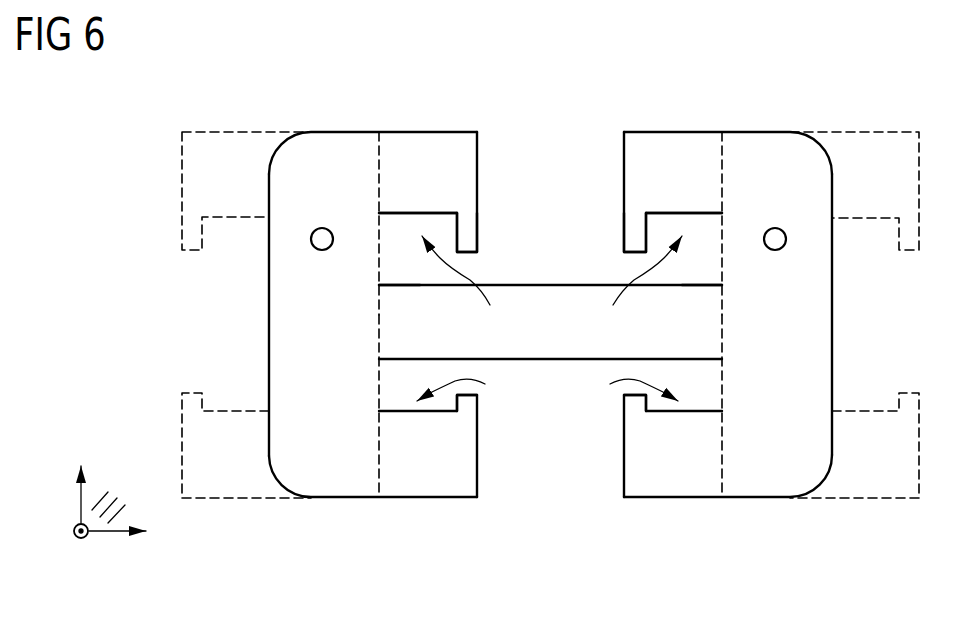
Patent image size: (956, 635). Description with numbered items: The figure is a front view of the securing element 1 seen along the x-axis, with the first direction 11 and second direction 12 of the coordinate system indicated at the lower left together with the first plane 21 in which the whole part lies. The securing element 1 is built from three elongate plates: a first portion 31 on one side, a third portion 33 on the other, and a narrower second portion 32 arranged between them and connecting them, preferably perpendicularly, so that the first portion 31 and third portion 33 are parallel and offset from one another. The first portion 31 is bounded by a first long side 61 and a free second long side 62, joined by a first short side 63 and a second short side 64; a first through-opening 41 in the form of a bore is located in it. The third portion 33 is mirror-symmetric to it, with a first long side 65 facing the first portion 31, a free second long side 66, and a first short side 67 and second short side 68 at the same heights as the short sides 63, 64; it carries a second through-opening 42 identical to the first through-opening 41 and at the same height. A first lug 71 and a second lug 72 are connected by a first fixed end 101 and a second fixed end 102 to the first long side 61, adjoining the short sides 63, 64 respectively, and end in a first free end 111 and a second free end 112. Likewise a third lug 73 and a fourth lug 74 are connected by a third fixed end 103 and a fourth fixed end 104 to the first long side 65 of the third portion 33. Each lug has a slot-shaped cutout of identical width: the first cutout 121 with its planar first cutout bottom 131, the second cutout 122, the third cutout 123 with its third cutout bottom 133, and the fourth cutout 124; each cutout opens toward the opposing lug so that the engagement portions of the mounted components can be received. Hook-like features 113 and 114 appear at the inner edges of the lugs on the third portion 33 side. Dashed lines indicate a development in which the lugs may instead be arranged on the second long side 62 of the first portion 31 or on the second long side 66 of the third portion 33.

The securing element 1 is at (290, 90).
The first direction 11 is at (80, 506).
The second direction 12 is at (87, 541).
The first plane 21 is at (103, 492).
The first portion 31 is at (831, 454).
The second portion 32 is at (537, 298).
The third portion 33 is at (269, 454).
The first through-opening 41 is at (775, 250).
The second through-opening 42 is at (322, 250).
The first long side 61 is at (721, 272).
The second long side 62 is at (833, 297).
The first short side 63 is at (765, 130).
The second short side 64 is at (765, 499).
The first long side 65 is at (381, 272).
The second long side 66 is at (268, 297).
The first short side 67 is at (343, 130).
The second short side 68 is at (338, 499).
The first lug 71 is at (667, 138).
The second lug 72 is at (672, 489).
The third lug 73 is at (452, 132).
The fourth lug 74 is at (442, 489).
The first fixed end 101 is at (723, 168).
The second fixed end 102 is at (723, 466).
The third fixed end 103 is at (377, 168).
The fourth fixed end 104 is at (377, 466).
The first free end 111 is at (623, 168).
The second free end 112 is at (621, 422).
The left upper hook 113 is at (479, 170).
The left lower hook 114 is at (479, 464).
The first cutout 121 is at (638, 288).
The second cutout 122 is at (622, 385).
The third cutout 123 is at (466, 288).
The fourth cutout 124 is at (473, 385).
The first cutout bottom 131 is at (660, 212).
The third cutout bottom 133 is at (450, 212).